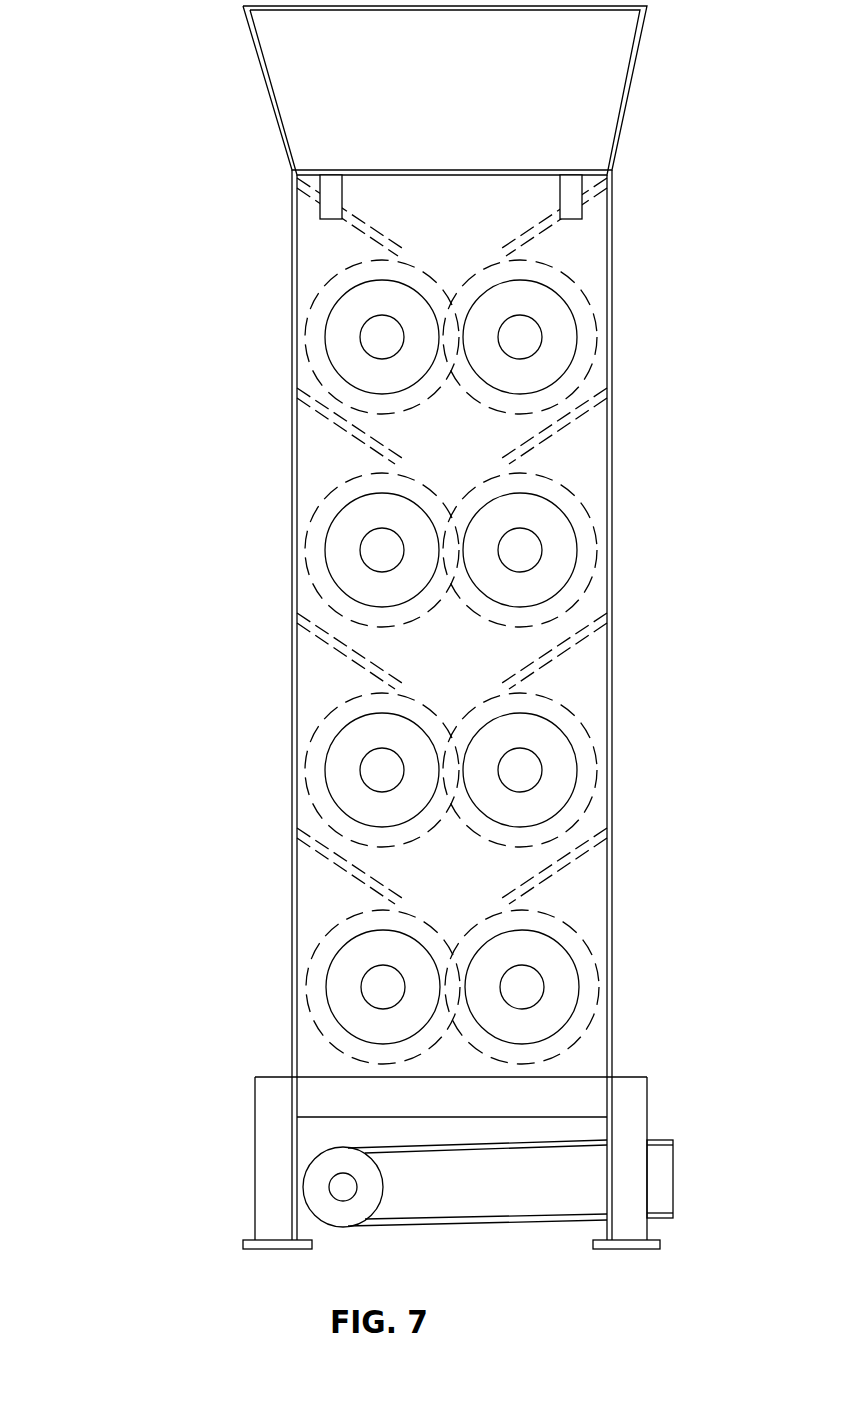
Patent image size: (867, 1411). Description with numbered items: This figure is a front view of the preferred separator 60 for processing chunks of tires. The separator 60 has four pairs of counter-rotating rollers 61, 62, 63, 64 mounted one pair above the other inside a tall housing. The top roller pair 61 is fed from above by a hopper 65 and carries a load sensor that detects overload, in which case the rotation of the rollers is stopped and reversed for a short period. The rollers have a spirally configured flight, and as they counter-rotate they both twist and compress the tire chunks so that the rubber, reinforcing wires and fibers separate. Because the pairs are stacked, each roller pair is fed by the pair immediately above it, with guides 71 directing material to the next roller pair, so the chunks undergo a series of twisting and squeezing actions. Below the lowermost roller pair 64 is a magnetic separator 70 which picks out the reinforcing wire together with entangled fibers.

The separator 60 is at (190, 283).
The top roller pair 61 is at (580, 322).
The second roller pair 62 is at (578, 532).
The third roller pair 63 is at (578, 750).
The lowermost roller pair 64 is at (577, 970).
The hopper 65 is at (597, 83).
The magnetic separator 70 is at (542, 1195).
The guides 71 is at (320, 412).